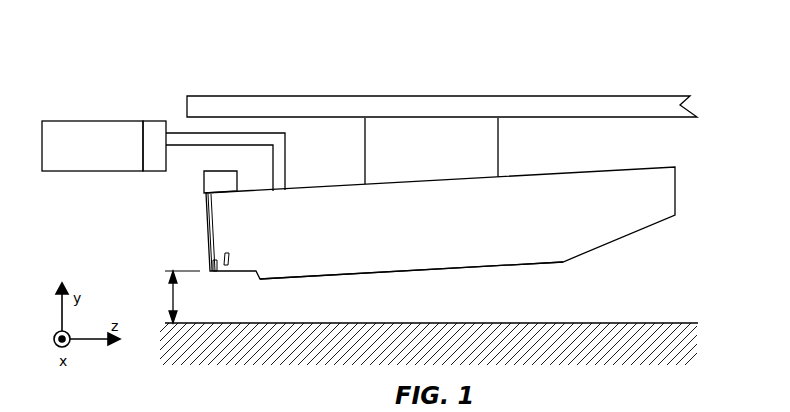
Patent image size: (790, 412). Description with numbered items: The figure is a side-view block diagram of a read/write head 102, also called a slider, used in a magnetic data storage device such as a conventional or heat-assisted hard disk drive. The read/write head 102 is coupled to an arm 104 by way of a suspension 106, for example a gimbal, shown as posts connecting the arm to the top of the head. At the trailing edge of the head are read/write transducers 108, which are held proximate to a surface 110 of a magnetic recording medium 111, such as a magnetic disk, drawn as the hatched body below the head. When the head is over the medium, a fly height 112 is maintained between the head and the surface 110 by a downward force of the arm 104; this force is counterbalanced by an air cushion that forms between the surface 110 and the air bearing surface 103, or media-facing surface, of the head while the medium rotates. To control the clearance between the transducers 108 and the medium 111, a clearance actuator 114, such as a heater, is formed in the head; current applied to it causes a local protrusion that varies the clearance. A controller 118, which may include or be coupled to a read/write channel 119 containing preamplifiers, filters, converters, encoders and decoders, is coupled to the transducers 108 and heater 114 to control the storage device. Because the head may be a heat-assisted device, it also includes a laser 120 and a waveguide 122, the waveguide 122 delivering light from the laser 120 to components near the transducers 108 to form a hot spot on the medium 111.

The read/write head 102 is at (596, 178).
The air bearing surface 103 is at (333, 277).
The arm 104 is at (634, 101).
The suspension 106 is at (500, 150).
The read/write transducers 108 is at (212, 262).
The surface 110 is at (600, 322).
The magnetic recording medium 111 is at (610, 355).
The fly height 112 is at (170, 297).
The clearance actuator 114 is at (223, 257).
The controller 118 is at (88, 121).
The read/write channel 119 is at (152, 121).
The laser 120 is at (218, 178).
The waveguide 122 is at (211, 215).